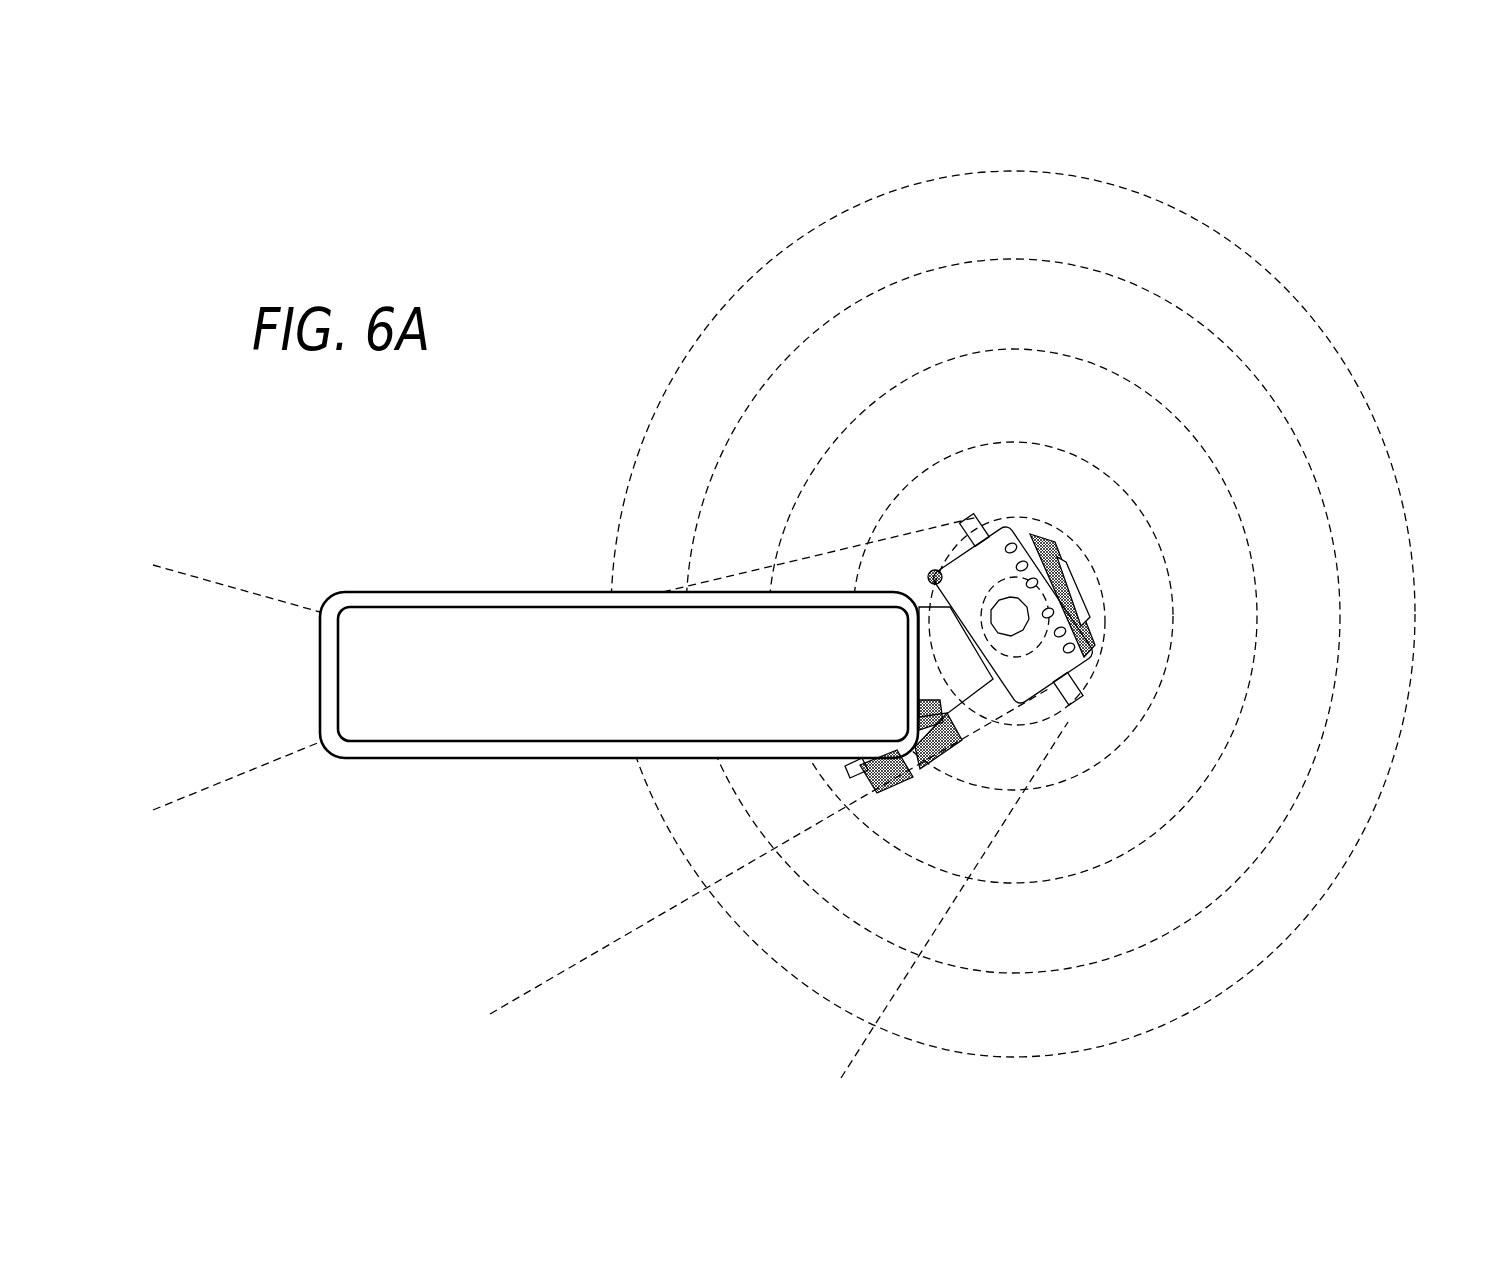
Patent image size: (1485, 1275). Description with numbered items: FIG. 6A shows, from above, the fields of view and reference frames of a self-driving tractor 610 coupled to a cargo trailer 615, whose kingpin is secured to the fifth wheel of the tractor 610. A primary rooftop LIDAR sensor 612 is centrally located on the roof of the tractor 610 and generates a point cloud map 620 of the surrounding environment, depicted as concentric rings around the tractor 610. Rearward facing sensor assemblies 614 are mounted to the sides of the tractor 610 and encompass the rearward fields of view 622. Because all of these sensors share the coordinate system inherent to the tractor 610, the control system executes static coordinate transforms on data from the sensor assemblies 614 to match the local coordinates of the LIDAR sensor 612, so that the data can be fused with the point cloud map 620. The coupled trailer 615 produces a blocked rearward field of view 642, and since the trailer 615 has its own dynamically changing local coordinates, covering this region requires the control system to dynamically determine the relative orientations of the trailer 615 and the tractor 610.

The self-driving tractor 610 is at (1010, 547).
The primary rooftop LIDAR sensor 612 is at (1010, 617).
The rearward facing sensor assemblies 614 is at (947, 555).
The cargo trailer 615 is at (622, 687).
The point cloud map 620 is at (1174, 470).
The rearward fields of view 622 is at (724, 1010).
The blocked rearward field of view 642 is at (249, 697).